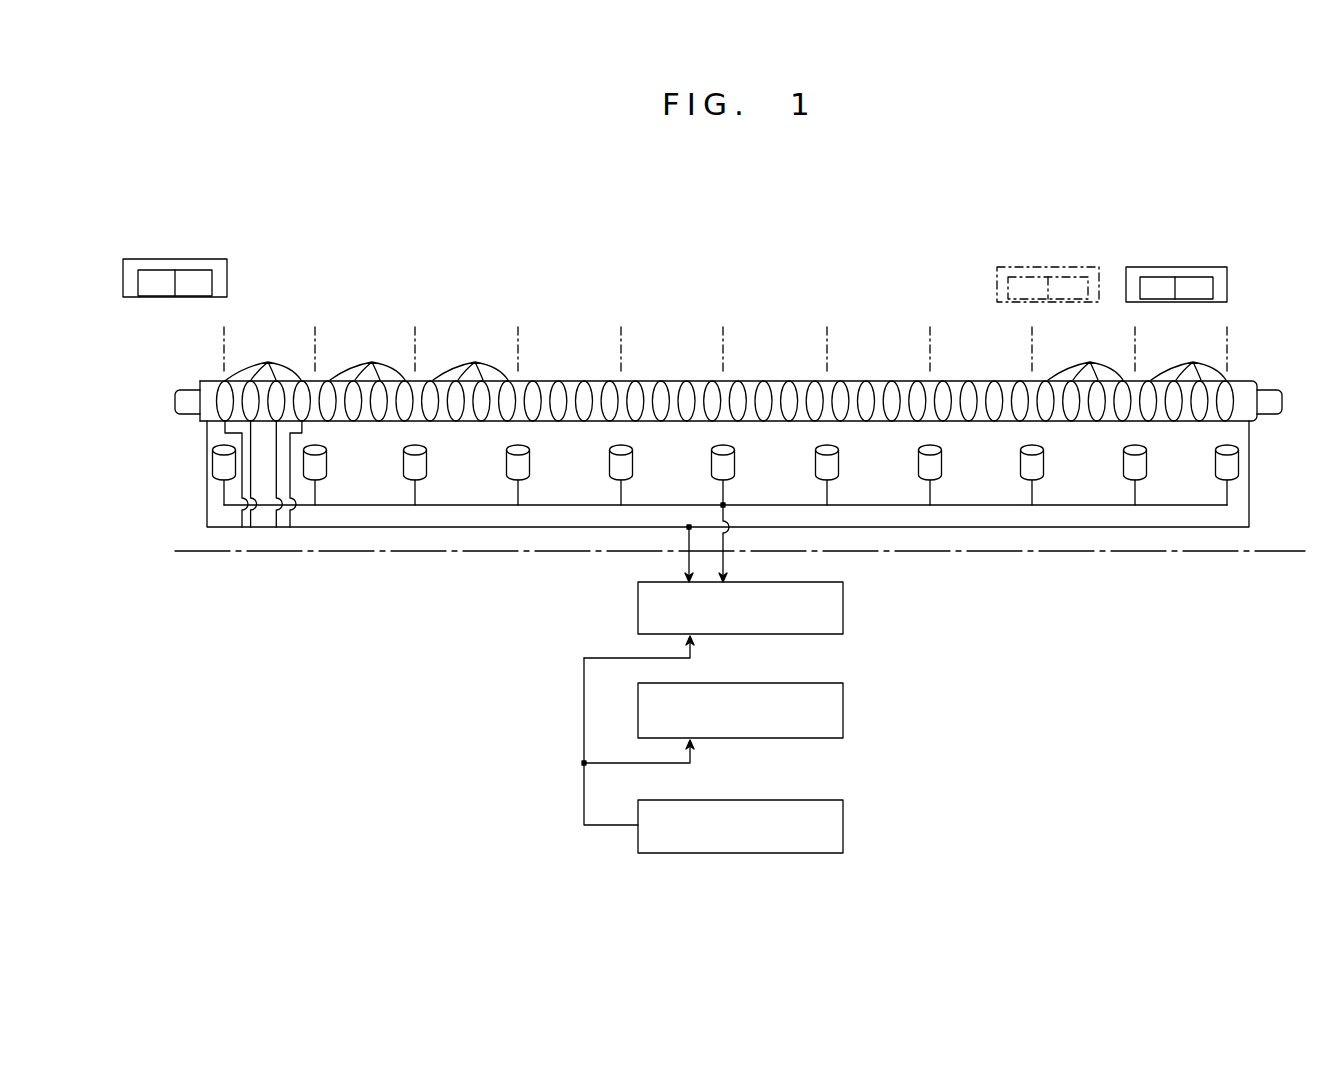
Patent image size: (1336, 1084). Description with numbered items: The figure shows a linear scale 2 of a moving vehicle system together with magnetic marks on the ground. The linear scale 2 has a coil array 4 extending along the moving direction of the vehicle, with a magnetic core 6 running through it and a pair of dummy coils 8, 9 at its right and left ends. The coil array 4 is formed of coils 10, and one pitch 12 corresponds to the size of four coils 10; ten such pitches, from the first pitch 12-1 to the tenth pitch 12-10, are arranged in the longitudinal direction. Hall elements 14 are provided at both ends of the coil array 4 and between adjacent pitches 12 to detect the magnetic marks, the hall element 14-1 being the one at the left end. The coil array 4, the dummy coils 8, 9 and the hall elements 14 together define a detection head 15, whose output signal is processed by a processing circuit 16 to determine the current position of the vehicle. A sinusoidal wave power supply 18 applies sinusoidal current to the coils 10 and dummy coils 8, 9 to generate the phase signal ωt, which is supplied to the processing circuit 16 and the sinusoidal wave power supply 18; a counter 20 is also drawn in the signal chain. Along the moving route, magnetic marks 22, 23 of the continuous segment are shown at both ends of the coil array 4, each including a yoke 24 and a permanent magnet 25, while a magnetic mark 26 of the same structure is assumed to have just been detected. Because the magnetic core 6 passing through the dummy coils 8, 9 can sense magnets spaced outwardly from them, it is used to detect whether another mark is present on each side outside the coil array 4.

The linear scale 2 is at (750, 909).
The coil array 4 is at (780, 379).
The magnetic core 6 is at (185, 413).
The dummy coil 8 is at (1243, 380).
The dummy coil 9 is at (210, 378).
The coils 10 is at (726, 360).
The pitch 12 is at (391, 330).
The first pitch 12-1 is at (290, 330).
The tenth pitch 12-10 is at (1205, 338).
The hall elements 14 is at (1214, 470).
The hall element 14-1 is at (208, 462).
The detection head 15 is at (190, 535).
The processing circuit 16 is at (845, 608).
The sinusoidal wave power supply 18 is at (845, 710).
The counter 20 is at (845, 825).
The magnetic mark 22 is at (1228, 273).
The magnetic mark 23 is at (228, 271).
The yoke 24 is at (185, 258).
The permanent magnet 25 is at (172, 298).
The magnetic mark 26 is at (1038, 263).